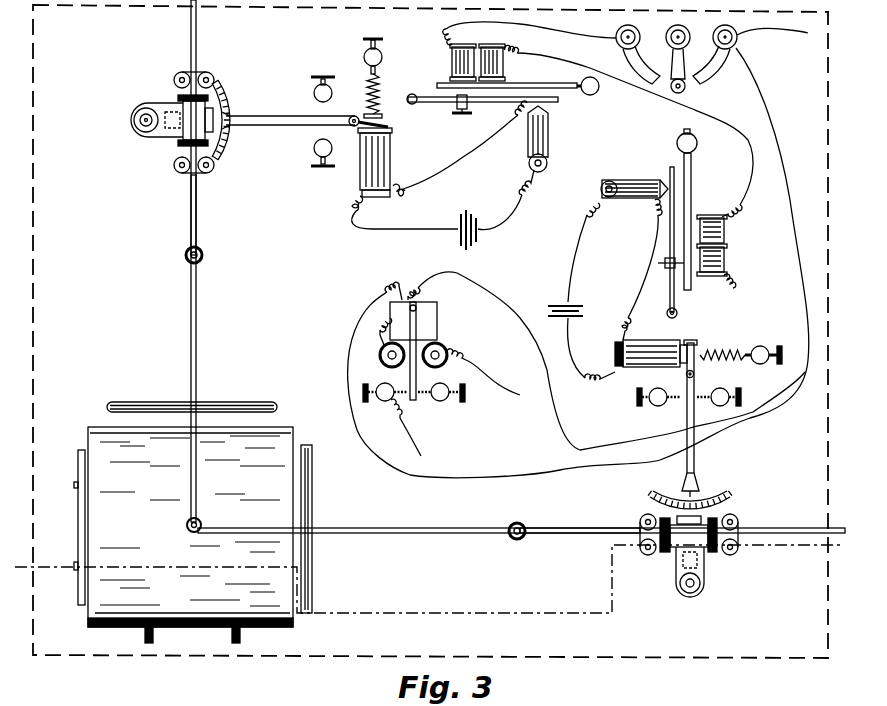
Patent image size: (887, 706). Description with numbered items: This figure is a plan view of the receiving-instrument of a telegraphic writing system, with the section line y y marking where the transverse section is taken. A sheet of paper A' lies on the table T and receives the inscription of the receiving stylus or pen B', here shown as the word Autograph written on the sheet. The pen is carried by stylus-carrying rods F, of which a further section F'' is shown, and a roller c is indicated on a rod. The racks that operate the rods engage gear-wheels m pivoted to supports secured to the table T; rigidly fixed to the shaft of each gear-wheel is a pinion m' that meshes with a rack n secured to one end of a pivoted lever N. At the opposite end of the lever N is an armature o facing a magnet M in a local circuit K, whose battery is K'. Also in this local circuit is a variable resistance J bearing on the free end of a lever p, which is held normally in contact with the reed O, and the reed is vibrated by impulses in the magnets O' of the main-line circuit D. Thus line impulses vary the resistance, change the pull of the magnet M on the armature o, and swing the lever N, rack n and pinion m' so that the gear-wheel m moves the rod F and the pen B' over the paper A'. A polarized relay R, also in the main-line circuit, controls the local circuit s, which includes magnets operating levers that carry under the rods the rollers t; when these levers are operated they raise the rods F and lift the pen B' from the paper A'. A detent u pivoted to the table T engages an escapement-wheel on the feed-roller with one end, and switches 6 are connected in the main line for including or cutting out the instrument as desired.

The section line y y is at (426, 577).
The sheet of paper A' is at (190, 535).
The autograph writing Autograph is at (156, 525).
The rollers t is at (215, 499).
The detent u is at (78, 524).
The stylus-carrying rods F is at (518, 266).
The shaft section F'' is at (415, 354).
The roller c is at (355, 392).
The receiving stylus or pen B' is at (203, 520).
The table T is at (99, 246).
The gear-wheels m is at (434, 334).
The pinion m' is at (472, 294).
The rack n is at (224, 160).
The pivoted lever N is at (687, 422).
The armature o is at (690, 342).
The magnet M is at (522, 247).
The local circuit K is at (527, 220).
The battery K' is at (483, 275).
The variable resistance J is at (588, 152).
The magnets O' is at (586, 158).
The reed O is at (573, 179).
The lever p is at (670, 172).
The switches 6 is at (712, 59).
The main-line circuit D is at (520, 322).
The polarized relay R is at (441, 342).
The local circuit s is at (398, 431).